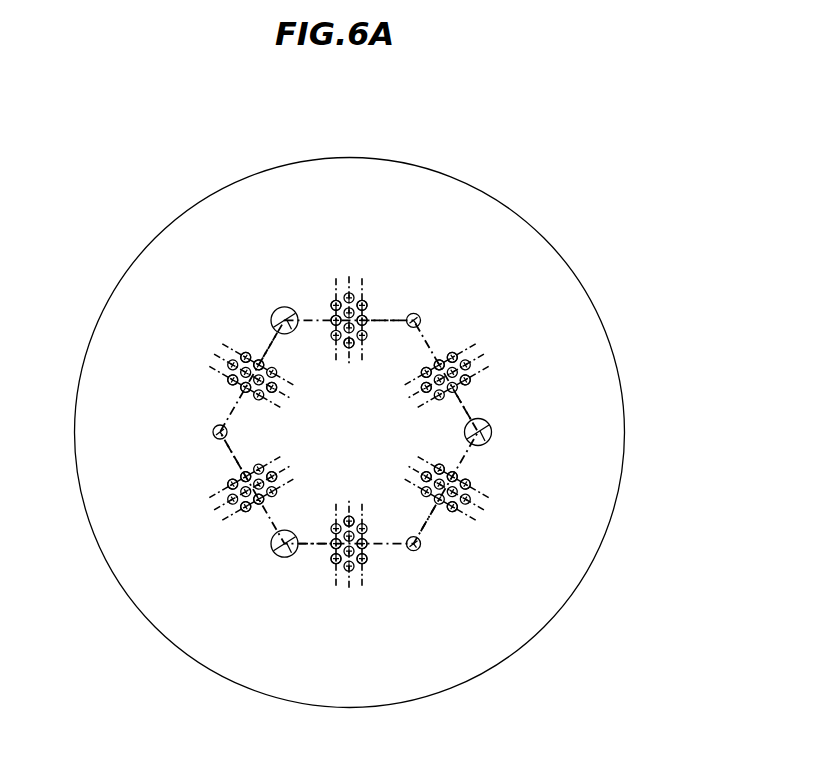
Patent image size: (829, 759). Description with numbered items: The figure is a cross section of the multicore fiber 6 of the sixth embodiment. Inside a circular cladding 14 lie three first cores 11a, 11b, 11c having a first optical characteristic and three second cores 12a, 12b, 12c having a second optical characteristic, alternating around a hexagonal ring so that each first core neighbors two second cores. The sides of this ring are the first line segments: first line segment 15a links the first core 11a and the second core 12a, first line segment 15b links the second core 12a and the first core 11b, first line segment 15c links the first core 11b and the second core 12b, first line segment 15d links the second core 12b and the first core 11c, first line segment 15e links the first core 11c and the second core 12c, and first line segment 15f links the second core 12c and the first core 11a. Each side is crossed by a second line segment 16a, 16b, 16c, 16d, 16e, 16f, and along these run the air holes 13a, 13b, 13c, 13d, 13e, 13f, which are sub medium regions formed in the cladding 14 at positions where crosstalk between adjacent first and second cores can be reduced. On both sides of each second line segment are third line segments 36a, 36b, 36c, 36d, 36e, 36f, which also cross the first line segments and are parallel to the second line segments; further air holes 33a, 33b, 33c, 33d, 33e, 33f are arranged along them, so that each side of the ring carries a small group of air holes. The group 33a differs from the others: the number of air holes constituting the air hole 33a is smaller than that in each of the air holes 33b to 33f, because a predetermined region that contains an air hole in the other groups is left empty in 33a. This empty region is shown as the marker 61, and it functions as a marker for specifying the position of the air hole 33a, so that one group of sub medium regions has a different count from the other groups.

The multicore fiber 6 is at (532, 200).
The cladding 14 is at (460, 672).
The first core 11a is at (280, 308).
The first core 11b is at (492, 431).
The first core 11c is at (281, 557).
The second core 12a is at (420, 316).
The second core 12b is at (416, 550).
The second core 12c is at (212, 432).
The air hole 13a is at (352, 290).
The air hole 13b is at (465, 362).
The air hole 13c is at (472, 497).
The air hole 13d is at (349, 570).
The air hole 13e is at (228, 498).
The air hole 13f is at (228, 372).
The first line segment 15a is at (378, 326).
The first line segment 15b is at (470, 405).
The first line segment 15c is at (428, 522).
The first line segment 15d is at (314, 548).
The first line segment 15e is at (232, 460).
The first line segment 15f is at (265, 345).
The second line segment 16a is at (350, 348).
The second line segment 16b is at (428, 395).
The second line segment 16c is at (420, 470).
The second line segment 16d is at (349, 518).
The second line segment 16e is at (272, 472).
The second line segment 16f is at (272, 392).
The air hole 33a is at (335, 303).
The air hole 33b is at (453, 358).
The air hole 33c is at (462, 480).
The air hole 33d is at (333, 528).
The air hole 33e is at (257, 468).
The air hole 33f is at (268, 370).
The third line segment 36a is at (336, 300).
The third line segment 36b is at (465, 345).
The third line segment 36c is at (475, 490).
The third line segment 36d is at (335, 572).
The third line segment 36e is at (222, 488).
The third line segment 36f is at (233, 358).
The marker 61 is at (363, 305).